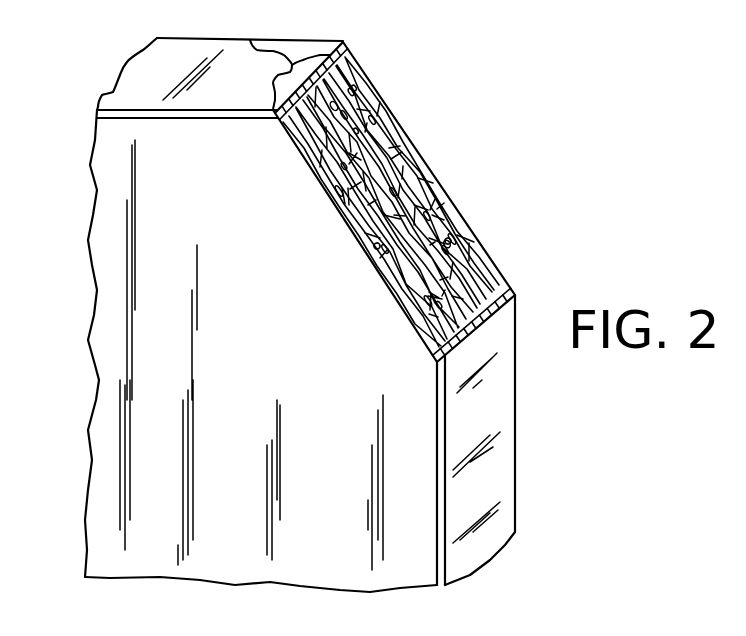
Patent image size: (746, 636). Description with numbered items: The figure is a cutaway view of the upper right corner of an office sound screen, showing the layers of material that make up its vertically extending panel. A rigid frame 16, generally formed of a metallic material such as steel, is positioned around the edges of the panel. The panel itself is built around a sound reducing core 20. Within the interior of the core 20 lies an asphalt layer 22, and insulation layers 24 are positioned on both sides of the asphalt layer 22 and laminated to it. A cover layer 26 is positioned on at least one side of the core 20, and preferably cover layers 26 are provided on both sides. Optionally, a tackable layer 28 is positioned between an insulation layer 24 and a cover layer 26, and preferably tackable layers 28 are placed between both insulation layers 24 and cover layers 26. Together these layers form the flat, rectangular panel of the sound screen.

The frame 16 is at (163, 80).
The sound reducing core 20 is at (250, 40).
The asphalt layer 22 is at (460, 227).
The insulation layer 24 is at (335, 218).
The cover layer 26 is at (368, 290).
The tackable layer 28 is at (305, 160).